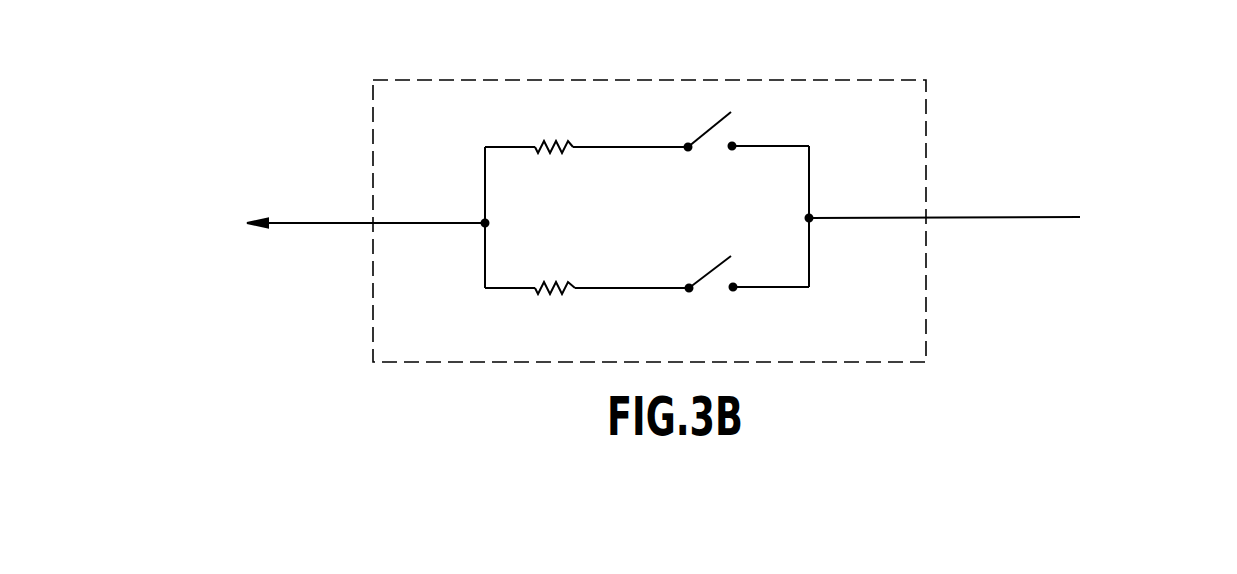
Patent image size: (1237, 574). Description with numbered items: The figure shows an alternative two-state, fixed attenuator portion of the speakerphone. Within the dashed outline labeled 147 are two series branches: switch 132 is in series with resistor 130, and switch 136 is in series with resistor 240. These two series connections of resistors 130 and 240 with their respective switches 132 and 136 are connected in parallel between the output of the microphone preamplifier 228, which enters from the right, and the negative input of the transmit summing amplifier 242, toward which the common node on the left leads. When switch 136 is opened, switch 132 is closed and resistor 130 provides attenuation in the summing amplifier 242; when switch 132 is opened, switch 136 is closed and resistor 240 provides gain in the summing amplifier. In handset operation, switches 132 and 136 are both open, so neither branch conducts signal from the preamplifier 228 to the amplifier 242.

The capacitor 147 is at (803, 80).
The resistor 130 is at (545, 141).
The switch 132 is at (707, 130).
The resistor 240 is at (553, 295).
The switch 136 is at (708, 275).
The microphone preamplifier 228 is at (1022, 217).
The transmit summing amplifier 242 is at (281, 237).